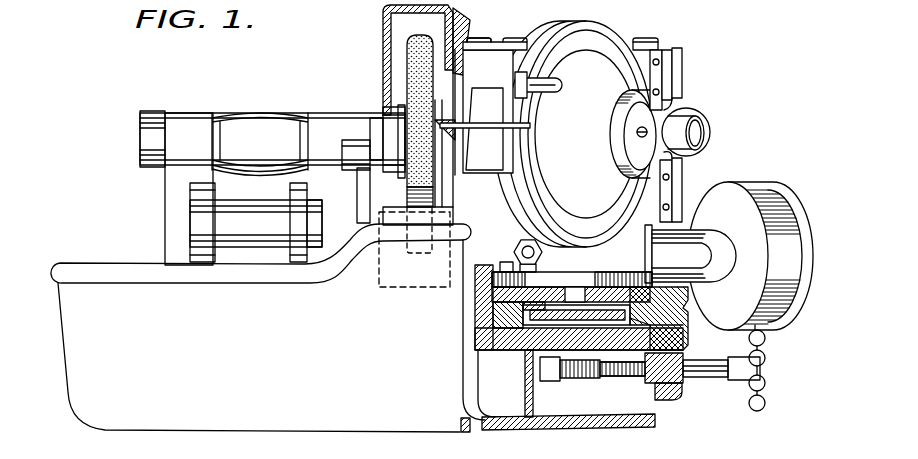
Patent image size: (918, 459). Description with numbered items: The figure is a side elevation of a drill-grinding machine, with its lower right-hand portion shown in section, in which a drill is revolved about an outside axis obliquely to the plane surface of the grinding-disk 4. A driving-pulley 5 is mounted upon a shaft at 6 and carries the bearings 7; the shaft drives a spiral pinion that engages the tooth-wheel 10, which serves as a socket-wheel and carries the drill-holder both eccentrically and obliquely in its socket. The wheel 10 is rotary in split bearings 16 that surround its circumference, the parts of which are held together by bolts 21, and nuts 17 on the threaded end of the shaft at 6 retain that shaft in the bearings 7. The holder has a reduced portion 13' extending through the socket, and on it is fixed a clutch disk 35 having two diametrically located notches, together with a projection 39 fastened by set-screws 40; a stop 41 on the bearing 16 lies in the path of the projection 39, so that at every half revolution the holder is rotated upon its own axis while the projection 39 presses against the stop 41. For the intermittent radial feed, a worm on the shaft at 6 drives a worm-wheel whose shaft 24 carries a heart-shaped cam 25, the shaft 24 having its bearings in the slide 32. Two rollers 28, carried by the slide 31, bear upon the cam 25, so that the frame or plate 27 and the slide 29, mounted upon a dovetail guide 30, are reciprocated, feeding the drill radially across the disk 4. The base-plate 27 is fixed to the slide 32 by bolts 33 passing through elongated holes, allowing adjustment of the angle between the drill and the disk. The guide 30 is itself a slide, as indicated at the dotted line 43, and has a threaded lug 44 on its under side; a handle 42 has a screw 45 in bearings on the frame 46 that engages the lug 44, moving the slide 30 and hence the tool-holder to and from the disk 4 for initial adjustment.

The grinding-disk 4 is at (410, 85).
The driving-pulley 5 is at (750, 256).
The shaft 6 is at (735, 255).
The bearings 7 is at (690, 254).
The tooth-wheel 10 is at (573, 134).
The reduced portion of the holder 13' is at (712, 128).
The split bearings 16 is at (485, 106).
The nuts 17 is at (521, 241).
The bolts 21 is at (478, 42).
The shaft 24 is at (685, 328).
The heart-shaped cam 25 is at (520, 348).
The frame or plate 27 is at (585, 278).
The rollers 28 is at (522, 368).
The slide 29 is at (476, 318).
The dovetail guide 30 is at (478, 336).
The slide 31 is at (490, 303).
The slide 32 is at (689, 308).
The bolts 33 is at (414, 247).
The disk 35 is at (630, 178).
The projection 39 is at (672, 66).
The set-screws 40 is at (640, 134).
The stop 41 is at (562, 85).
The handle 42 is at (766, 388).
The dotted line 43 is at (480, 364).
The threaded lug 44 is at (570, 358).
The screw 45 is at (623, 379).
The frame 46 is at (677, 400).